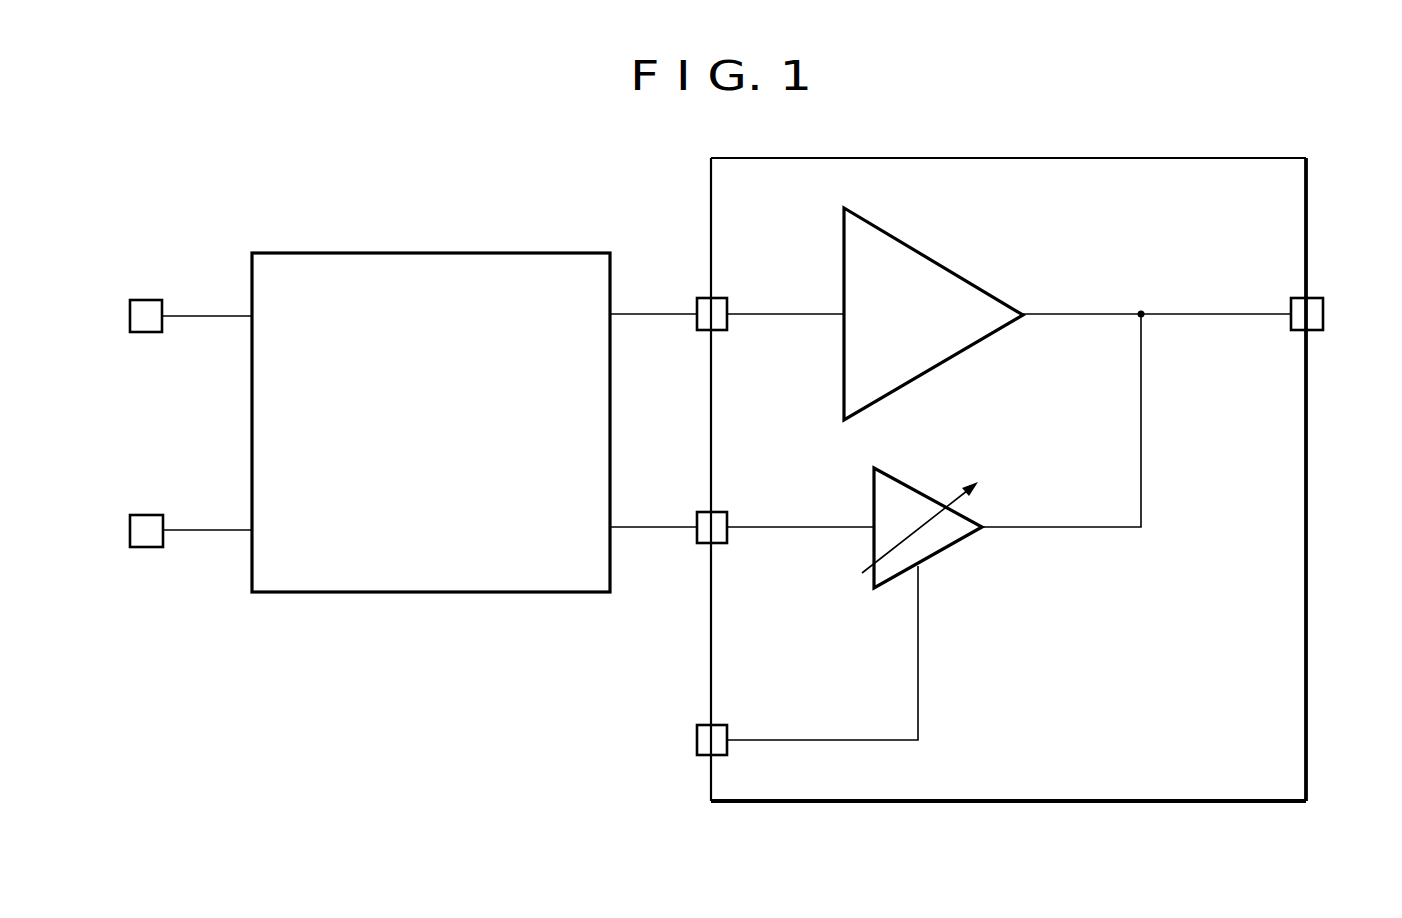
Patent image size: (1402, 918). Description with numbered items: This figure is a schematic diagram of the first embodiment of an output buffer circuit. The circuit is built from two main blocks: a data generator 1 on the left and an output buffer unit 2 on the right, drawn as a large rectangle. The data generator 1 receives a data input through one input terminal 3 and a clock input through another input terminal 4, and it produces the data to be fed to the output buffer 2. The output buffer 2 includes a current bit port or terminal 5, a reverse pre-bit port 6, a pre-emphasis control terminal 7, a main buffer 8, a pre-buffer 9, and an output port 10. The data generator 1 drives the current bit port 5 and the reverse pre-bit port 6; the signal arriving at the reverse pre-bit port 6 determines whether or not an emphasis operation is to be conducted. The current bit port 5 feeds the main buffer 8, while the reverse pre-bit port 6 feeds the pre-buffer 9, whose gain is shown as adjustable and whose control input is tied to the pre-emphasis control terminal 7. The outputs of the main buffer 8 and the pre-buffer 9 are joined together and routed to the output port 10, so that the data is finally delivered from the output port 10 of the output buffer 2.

The data generator 1 is at (400, 254).
The output buffer unit 2 is at (968, 158).
The DIN terminal 3 is at (147, 300).
The CLOCK terminal 4 is at (148, 515).
The current bit port 5 is at (722, 298).
The reverse pre-bit port 6 is at (722, 512).
The pre-emphasis control terminal 7 is at (722, 725).
The main buffer 8 is at (935, 258).
The pre-buffer 9 is at (929, 497).
The output port 10 is at (1310, 298).